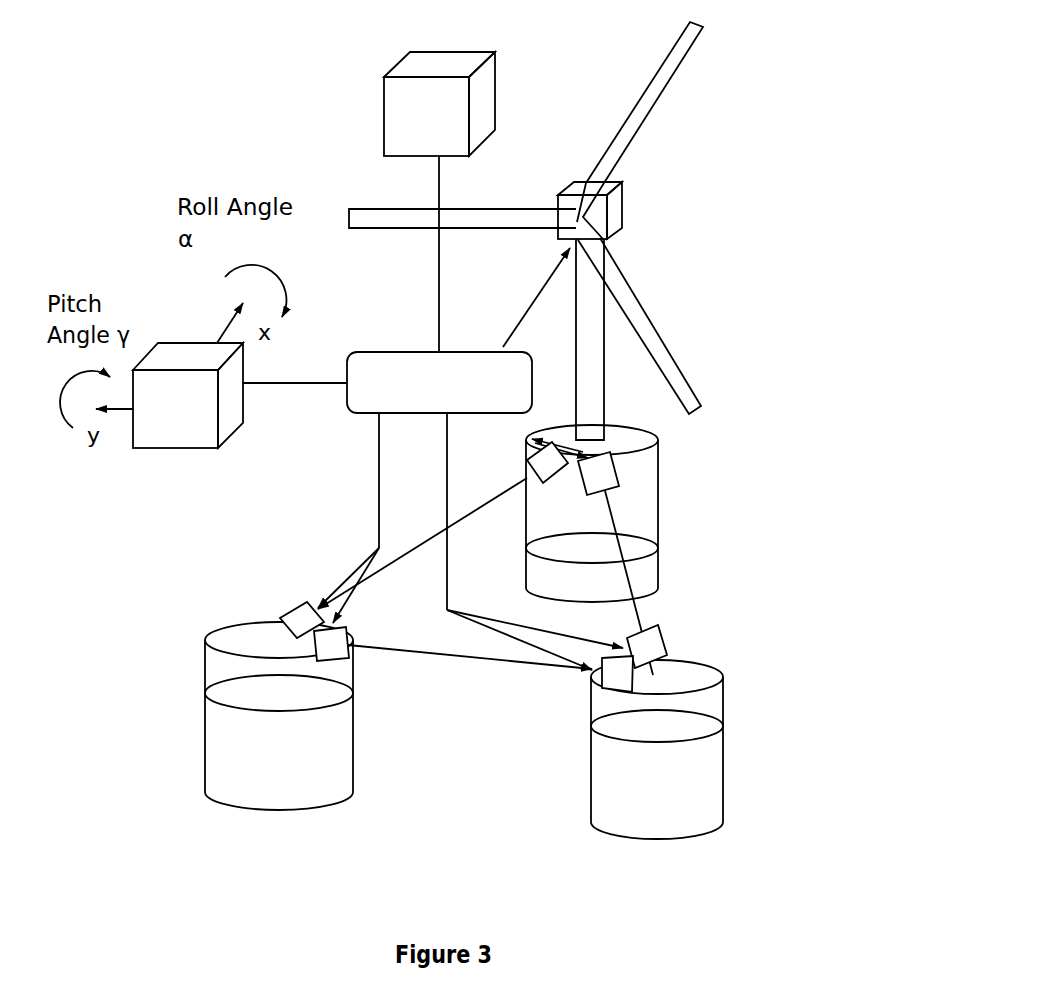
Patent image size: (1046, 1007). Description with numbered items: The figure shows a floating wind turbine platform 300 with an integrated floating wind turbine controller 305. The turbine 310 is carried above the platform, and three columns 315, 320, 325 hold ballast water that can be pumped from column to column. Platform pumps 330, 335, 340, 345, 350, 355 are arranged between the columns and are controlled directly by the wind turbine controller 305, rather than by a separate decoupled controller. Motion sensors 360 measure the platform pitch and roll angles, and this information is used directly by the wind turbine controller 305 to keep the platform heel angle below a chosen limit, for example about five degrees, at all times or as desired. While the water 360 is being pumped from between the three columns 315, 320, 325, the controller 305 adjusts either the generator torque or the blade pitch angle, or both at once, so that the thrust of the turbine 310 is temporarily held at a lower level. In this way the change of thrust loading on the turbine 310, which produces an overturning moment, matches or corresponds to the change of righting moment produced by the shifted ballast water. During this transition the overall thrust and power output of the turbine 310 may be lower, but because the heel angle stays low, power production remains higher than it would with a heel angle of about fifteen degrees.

The floating wind turbine platform 300 is at (812, 36).
The wind turbine controller 305 is at (439, 382).
The turbine 310 is at (622, 216).
The column 315 is at (658, 530).
The column 320 is at (205, 718).
The column 325 is at (723, 745).
The platform pump 330 is at (527, 460).
The platform pump 335 is at (618, 478).
The platform pump 340 is at (301, 606).
The platform pump 345 is at (348, 647).
The platform pump 350 is at (657, 642).
The platform pump 355 is at (600, 681).
The motion sensors 360 is at (610, 768).